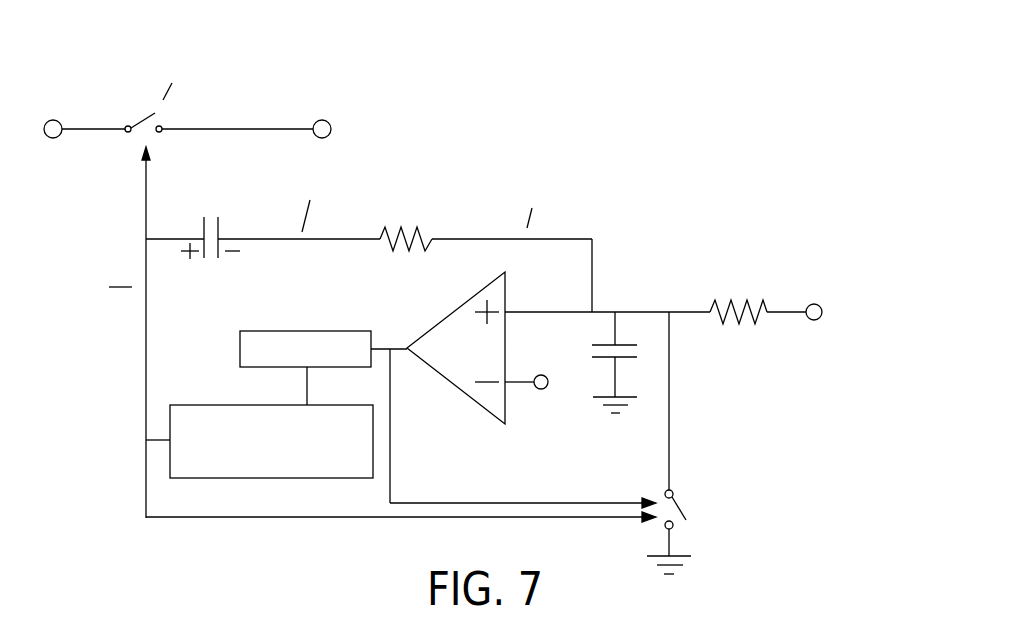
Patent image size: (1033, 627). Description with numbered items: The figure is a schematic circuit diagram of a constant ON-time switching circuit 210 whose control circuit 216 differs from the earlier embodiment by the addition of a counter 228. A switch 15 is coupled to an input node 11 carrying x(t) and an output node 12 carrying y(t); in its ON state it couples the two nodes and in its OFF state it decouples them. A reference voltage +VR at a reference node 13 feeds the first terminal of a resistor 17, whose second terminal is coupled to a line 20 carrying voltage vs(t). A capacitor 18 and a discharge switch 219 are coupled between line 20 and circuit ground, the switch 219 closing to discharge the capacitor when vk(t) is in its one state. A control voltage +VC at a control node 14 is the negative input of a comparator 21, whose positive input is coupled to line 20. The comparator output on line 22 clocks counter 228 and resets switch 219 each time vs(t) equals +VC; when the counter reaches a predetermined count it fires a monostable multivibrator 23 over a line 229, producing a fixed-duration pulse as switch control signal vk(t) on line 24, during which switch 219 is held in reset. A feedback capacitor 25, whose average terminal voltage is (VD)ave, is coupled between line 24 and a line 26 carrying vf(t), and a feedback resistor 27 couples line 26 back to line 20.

The input node 11 is at (53, 68).
The output node 12 is at (325, 68).
The reference node 13 is at (857, 285).
The control node 14 is at (555, 438).
The switch 15 is at (142, 100).
The resistor 17 is at (743, 290).
The capacitor 18 is at (628, 332).
The line 20 is at (581, 228).
The comparator 21 is at (445, 312).
The line 22 is at (423, 494).
The monostable multivibrator 23 is at (165, 462).
The line 24 is at (132, 331).
The feedback capacitor 25 is at (227, 222).
The line 26 is at (346, 232).
The feedback resistor 27 is at (435, 222).
The switching circuit 210 is at (645, 86).
The control circuit 216 is at (118, 242).
The switch 219 is at (692, 486).
The counter 228 is at (305, 318).
The line 229 is at (295, 381).